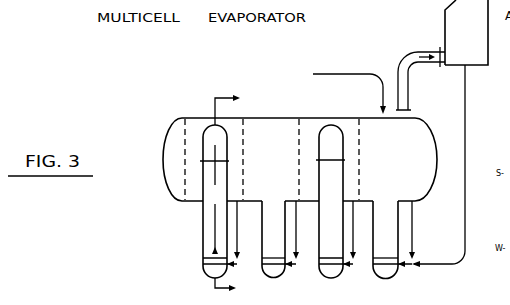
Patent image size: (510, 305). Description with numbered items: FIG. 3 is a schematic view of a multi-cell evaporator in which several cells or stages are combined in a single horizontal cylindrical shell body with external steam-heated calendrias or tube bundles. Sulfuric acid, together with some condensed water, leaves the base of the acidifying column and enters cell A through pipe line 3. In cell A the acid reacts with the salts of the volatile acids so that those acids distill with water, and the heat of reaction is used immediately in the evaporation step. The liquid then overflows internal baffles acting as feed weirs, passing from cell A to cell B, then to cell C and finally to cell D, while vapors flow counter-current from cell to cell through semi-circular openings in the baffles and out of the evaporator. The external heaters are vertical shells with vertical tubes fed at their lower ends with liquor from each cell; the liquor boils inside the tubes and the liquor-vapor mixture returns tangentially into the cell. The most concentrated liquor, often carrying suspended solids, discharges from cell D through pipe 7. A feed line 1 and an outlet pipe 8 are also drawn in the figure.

The feed inlet line 1 is at (322, 72).
The pipe line 3 is at (445, 166).
The pipe 7 is at (176, 202).
The vapor outlet pipe 8 is at (420, 72).